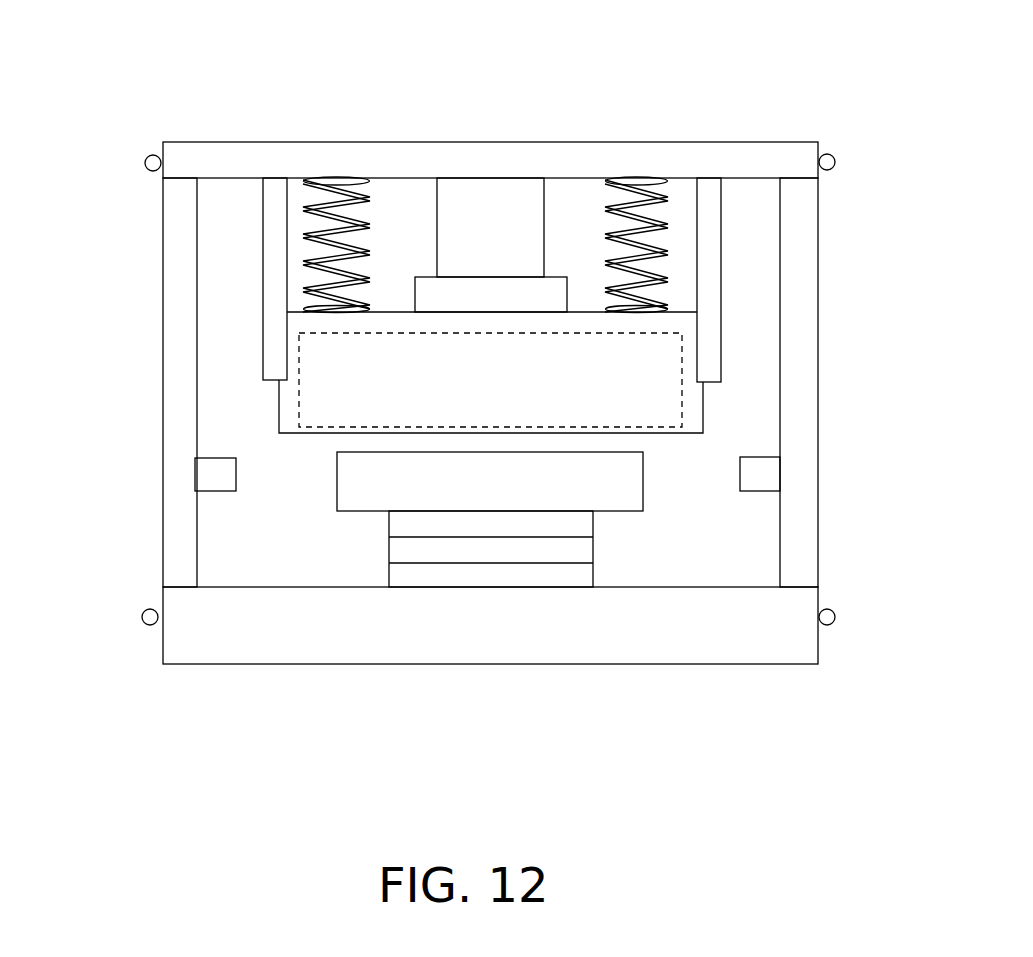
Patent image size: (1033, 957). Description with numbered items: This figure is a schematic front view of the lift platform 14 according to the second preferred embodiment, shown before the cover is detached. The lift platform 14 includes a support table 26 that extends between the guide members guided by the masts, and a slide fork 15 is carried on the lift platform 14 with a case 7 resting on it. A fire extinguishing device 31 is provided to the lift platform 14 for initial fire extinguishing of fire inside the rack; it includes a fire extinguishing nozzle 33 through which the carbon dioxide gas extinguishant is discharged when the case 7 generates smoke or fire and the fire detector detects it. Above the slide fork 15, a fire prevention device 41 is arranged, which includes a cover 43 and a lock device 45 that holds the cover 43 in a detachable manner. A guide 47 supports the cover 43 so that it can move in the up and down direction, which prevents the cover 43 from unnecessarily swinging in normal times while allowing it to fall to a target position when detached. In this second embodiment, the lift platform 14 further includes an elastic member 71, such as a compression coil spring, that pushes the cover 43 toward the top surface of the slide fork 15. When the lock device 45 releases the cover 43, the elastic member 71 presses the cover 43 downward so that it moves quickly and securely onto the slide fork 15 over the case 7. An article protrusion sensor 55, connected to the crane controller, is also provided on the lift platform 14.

The lift platform 14 is at (507, 117).
The fire extinguishing device 31 is at (835, 122).
The support table 26 is at (520, 631).
The fire extinguishing nozzle 33 is at (145, 162).
The elastic member 71 is at (335, 210).
The guide 47 is at (275, 300).
The fire prevention device 41 is at (425, 218).
The lock device 45 is at (553, 268).
The cover 43 is at (708, 405).
The case 7 is at (603, 499).
The slide fork 15 is at (613, 546).
The article protrusion sensor 55 is at (207, 474).